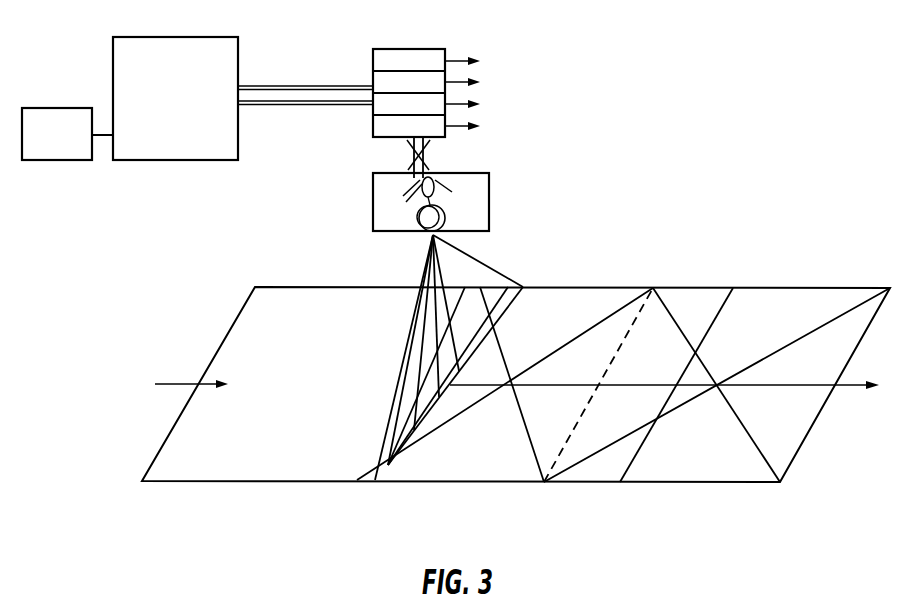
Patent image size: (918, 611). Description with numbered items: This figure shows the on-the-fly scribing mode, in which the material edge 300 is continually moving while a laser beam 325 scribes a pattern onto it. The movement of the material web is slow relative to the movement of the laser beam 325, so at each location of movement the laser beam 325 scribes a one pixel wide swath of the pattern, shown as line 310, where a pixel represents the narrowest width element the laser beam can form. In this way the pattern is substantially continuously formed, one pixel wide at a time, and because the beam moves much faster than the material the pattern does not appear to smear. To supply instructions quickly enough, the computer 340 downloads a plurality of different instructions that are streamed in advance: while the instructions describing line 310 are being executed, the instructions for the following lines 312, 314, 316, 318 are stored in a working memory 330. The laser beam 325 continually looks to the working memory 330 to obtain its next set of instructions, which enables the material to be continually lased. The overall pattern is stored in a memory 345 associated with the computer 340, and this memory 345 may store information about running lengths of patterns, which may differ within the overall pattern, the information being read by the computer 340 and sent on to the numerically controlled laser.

The material edge 300 is at (210, 482).
The pattern swath line 310 is at (520, 291).
The line 312 is at (485, 125).
The line 314 is at (485, 103).
The line 316 is at (485, 81).
The line 318 is at (485, 60).
The laser beam 325 is at (489, 200).
The working memory 330 is at (405, 49).
The computer 340 is at (168, 160).
The memory 345 is at (55, 160).